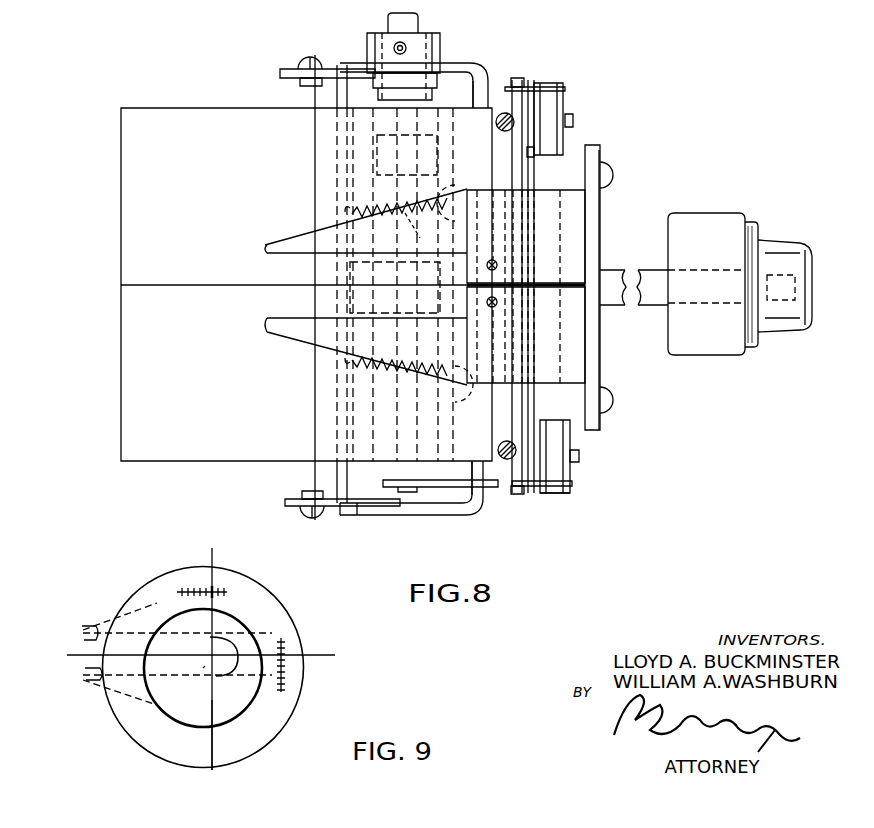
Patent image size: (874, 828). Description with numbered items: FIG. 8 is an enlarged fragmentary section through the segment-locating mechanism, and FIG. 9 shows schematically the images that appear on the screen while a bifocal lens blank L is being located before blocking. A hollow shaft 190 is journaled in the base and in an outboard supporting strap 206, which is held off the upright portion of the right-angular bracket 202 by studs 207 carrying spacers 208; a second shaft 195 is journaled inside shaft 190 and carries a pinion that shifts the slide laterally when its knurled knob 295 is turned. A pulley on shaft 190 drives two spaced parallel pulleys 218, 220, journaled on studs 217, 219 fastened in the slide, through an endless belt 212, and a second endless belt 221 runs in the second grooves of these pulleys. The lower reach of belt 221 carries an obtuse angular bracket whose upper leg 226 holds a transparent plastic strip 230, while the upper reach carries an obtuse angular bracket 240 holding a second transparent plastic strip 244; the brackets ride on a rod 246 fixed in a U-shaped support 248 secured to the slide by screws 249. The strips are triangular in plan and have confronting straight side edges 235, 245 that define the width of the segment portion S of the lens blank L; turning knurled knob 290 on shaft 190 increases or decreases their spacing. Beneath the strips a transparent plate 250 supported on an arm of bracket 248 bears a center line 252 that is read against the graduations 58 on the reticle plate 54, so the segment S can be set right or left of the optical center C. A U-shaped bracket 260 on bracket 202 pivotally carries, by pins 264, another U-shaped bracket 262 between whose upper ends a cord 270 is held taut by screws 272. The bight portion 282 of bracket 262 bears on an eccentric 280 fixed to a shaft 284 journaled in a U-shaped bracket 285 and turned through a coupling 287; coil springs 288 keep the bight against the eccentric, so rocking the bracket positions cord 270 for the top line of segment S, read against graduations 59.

In FIG. 8, the hollow shaft 190 is at (697, 270).
In FIG. 8, the second shaft 195 is at (779, 276).
In FIG. 8, the right-angular bracket 202 is at (358, 516).
In FIG. 8, the outboard supporting strap 206 is at (600, 210).
In FIG. 8, the studs 207 is at (609, 173).
In FIG. 8, the spacers 208 is at (586, 150).
In FIG. 8, the endless belt 212 is at (536, 500).
In FIG. 8, the stud 217 is at (580, 458).
In FIG. 8, the pulley 218 is at (571, 483).
In FIG. 8, the stud 219 is at (574, 120).
In FIG. 8, the pulley 220 is at (566, 87).
In FIG. 8, the endless belt 221 is at (561, 494).
In FIG. 8, the upper leg 226 is at (578, 363).
In FIG. 8, the transparent plastic strip 230 is at (282, 334).
In FIG. 8, the side edge 235 is at (276, 318).
In FIG. 9, the side edge 235 is at (103, 681).
In FIG. 8, the obtuse angular bracket 240 is at (568, 245).
In FIG. 8, the second transparent plastic strip 244 is at (285, 244).
In FIG. 8, the side edge 245 is at (268, 256).
In FIG. 9, the side edge 245 is at (82, 645).
In FIG. 8, the rod 246 is at (520, 78).
In FIG. 8, the U-shaped support 248 is at (436, 490).
In FIG. 8, the screws 249 is at (505, 112).
In FIG. 8, the transparent plate 250 is at (195, 461).
In FIG. 8, the center line 252 is at (190, 285).
In FIG. 9, the center line 252 is at (72, 655).
In FIG. 8, the U-shaped bracket 260 is at (280, 74).
In FIG. 8, the U-shaped bracket 262 is at (292, 69).
In FIG. 8, the pins 264 is at (298, 82).
In FIG. 8, the cord 270 is at (315, 408).
In FIG. 9, the cord 270 is at (215, 757).
In FIG. 8, the screws 272 is at (306, 58).
In FIG. 8, the eccentric 280 is at (412, 293).
In FIG. 8, the bight portion 282 is at (376, 515).
In FIG. 8, the shaft 284 is at (440, 216).
In FIG. 8, the U-shaped bracket 285 is at (428, 480).
In FIG. 8, the coupling 287 is at (441, 43).
In FIG. 8, the coil springs 288 is at (386, 368).
In FIG. 8, the knurled knob 290 is at (708, 213).
In FIG. 8, the knurled knob 295 is at (786, 243).
In FIG. 9, the transparent reticle plate 54 is at (138, 741).
In FIG. 9, the graduations 58 is at (292, 687).
In FIG. 9, the graduations 59 is at (172, 584).
In FIG. 9, the optical center C is at (203, 671).
In FIG. 9, the segment portion S is at (216, 673).
In FIG. 9, the bifocal lens blank L is at (229, 622).